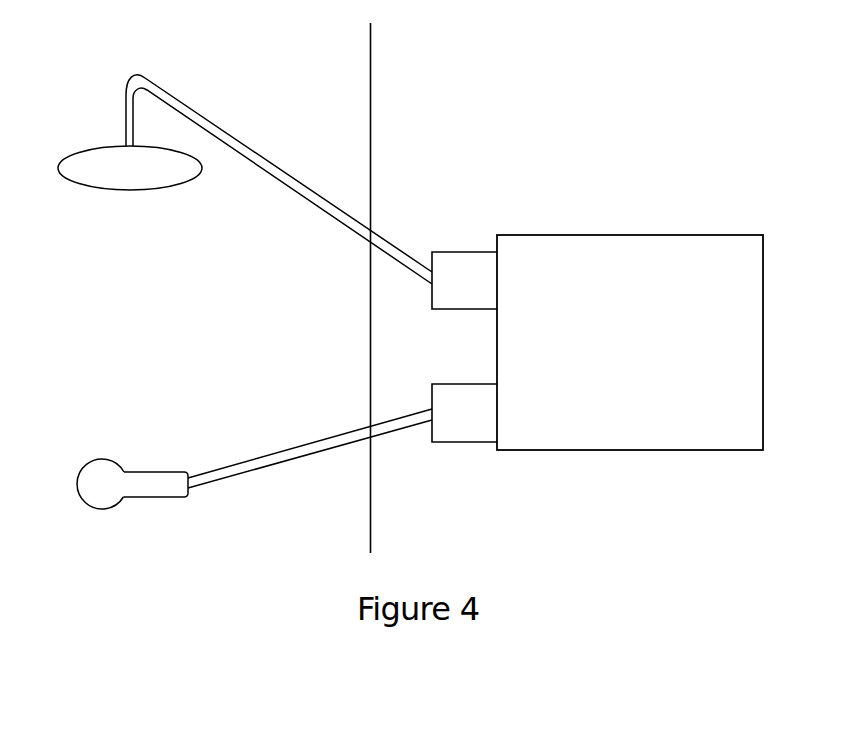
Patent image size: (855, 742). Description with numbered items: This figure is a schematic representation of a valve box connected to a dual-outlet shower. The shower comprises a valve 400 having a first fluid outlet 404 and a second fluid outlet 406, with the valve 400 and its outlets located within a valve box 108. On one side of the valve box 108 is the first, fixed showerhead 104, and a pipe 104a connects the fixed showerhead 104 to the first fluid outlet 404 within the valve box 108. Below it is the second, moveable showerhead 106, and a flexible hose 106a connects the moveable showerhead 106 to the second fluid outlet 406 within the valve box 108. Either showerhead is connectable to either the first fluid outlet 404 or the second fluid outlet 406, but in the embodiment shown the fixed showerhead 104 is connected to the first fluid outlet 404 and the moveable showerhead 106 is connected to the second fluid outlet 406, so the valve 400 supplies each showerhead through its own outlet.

The fixed showerhead 104 is at (128, 167).
The pipe 104a is at (225, 132).
The moveable showerhead 106 is at (103, 485).
The flexible hose 106a is at (287, 452).
The valve box 108 is at (468, 74).
The valve 400 is at (653, 357).
The first fluid outlet 404 is at (488, 292).
The second fluid outlet 406 is at (488, 425).